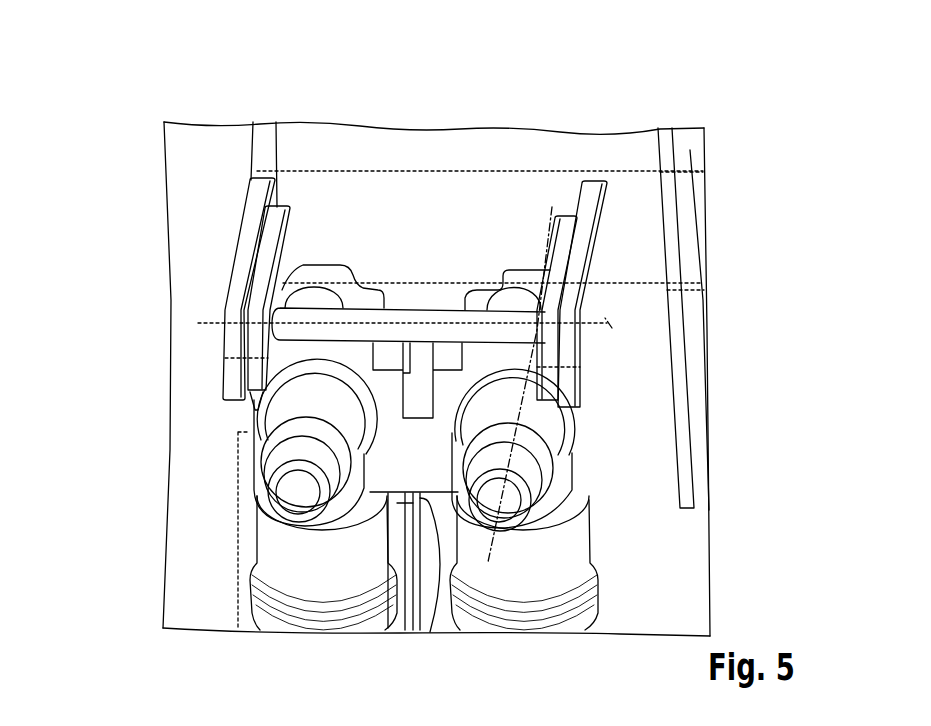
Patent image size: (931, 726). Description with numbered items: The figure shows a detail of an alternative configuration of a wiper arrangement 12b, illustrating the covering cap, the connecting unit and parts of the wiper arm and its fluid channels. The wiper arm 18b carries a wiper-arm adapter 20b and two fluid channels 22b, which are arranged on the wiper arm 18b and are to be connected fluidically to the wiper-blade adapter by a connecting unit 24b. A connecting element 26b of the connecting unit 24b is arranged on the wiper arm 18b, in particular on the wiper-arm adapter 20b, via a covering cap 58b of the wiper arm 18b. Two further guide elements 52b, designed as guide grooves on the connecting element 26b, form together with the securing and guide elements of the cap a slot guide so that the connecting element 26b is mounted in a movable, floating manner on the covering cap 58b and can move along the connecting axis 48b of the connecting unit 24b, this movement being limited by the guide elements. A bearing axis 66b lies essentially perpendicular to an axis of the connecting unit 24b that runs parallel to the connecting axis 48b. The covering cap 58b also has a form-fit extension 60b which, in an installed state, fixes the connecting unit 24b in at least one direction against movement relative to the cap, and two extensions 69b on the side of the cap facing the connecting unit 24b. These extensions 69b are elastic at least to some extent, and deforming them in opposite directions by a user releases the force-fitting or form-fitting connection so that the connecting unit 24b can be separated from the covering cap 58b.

The wiper arrangement 12b is at (162, 75).
The wiper arm 18b is at (150, 207).
The wiper-arm adapter 20b is at (732, 197).
The fluid channels 22b is at (322, 588).
The connecting unit 24b is at (198, 393).
The connecting element 26b is at (305, 397).
The connecting axis 48b is at (550, 202).
The further guide elements 52b is at (288, 296).
The covering cap 58b is at (695, 147).
The form-fit extension 60b is at (430, 632).
The bearing axis 66b is at (612, 328).
The extensions 69b is at (232, 348).